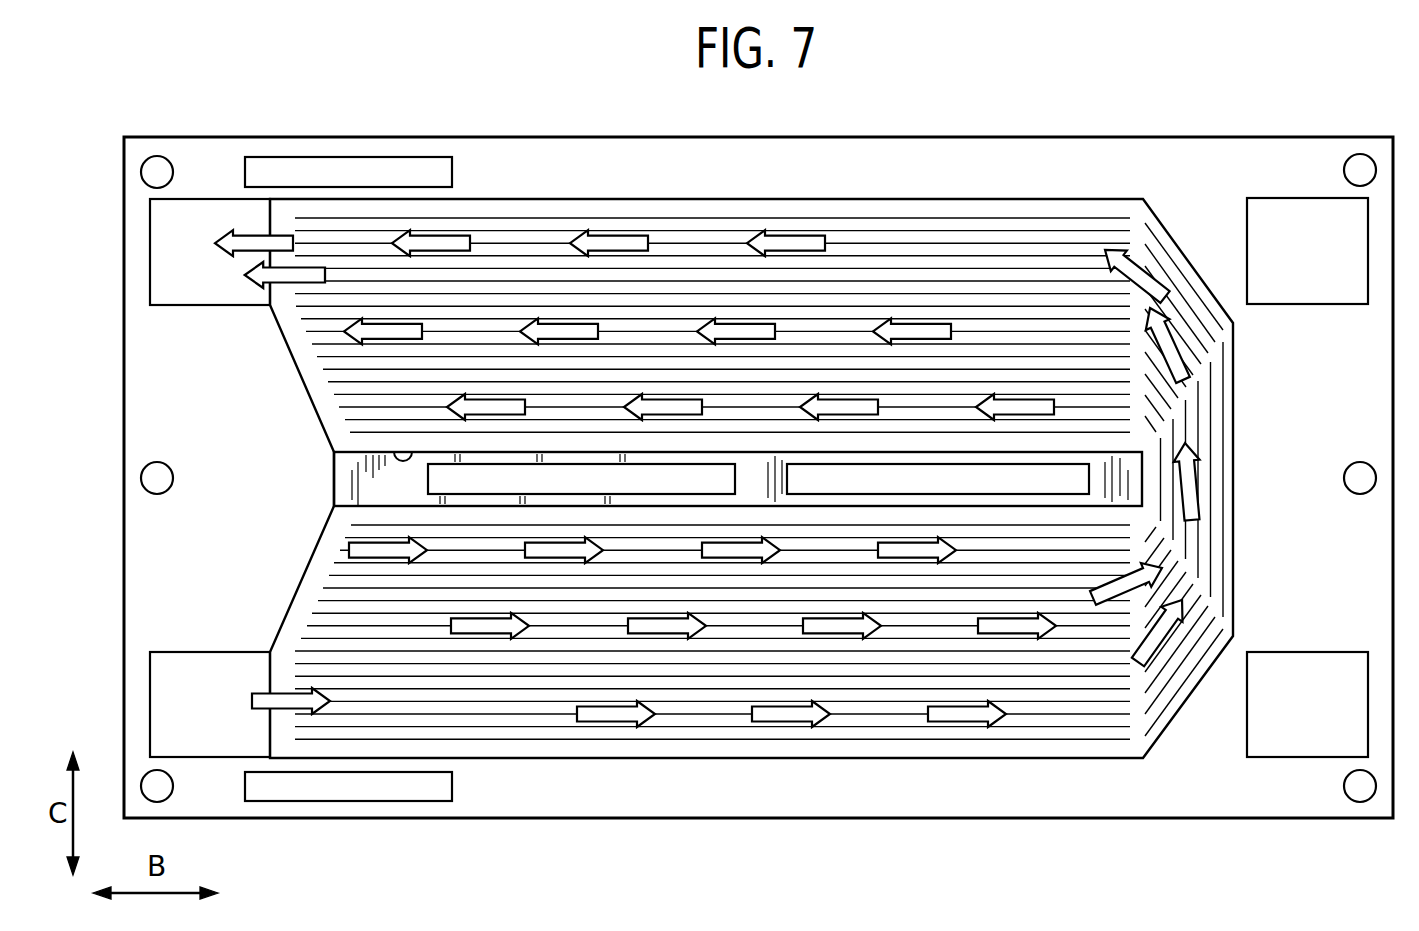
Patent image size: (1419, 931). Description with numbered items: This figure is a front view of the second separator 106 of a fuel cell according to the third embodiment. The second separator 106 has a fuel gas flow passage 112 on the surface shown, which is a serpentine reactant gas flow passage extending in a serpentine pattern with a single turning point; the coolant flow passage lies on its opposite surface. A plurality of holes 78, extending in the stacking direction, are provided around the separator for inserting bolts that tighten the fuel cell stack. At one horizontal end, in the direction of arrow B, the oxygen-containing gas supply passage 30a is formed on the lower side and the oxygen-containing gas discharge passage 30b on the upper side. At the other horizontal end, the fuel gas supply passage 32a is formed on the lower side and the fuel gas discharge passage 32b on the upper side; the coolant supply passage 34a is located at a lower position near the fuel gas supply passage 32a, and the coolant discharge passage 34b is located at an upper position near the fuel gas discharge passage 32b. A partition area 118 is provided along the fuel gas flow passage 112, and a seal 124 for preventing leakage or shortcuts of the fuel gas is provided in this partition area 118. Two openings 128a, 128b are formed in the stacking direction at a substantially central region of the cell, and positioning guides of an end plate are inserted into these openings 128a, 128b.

The second separator 106 is at (1007, 117).
The hole 78 is at (158, 170).
The coolant discharge passage 34b is at (322, 166).
The coolant supply passage 34a is at (363, 790).
The fuel gas discharge passage 32b is at (210, 252).
The fuel gas supply passage 32a is at (210, 704).
The oxygen-containing gas discharge passage 30b is at (1307, 251).
The oxygen-containing gas supply passage 30a is at (1307, 704).
The fuel gas flow passage 112 is at (989, 738).
The seal 124 is at (346, 483).
The opening 128b is at (581, 481).
The opening 128a is at (938, 481).
The partition area 118 is at (412, 452).